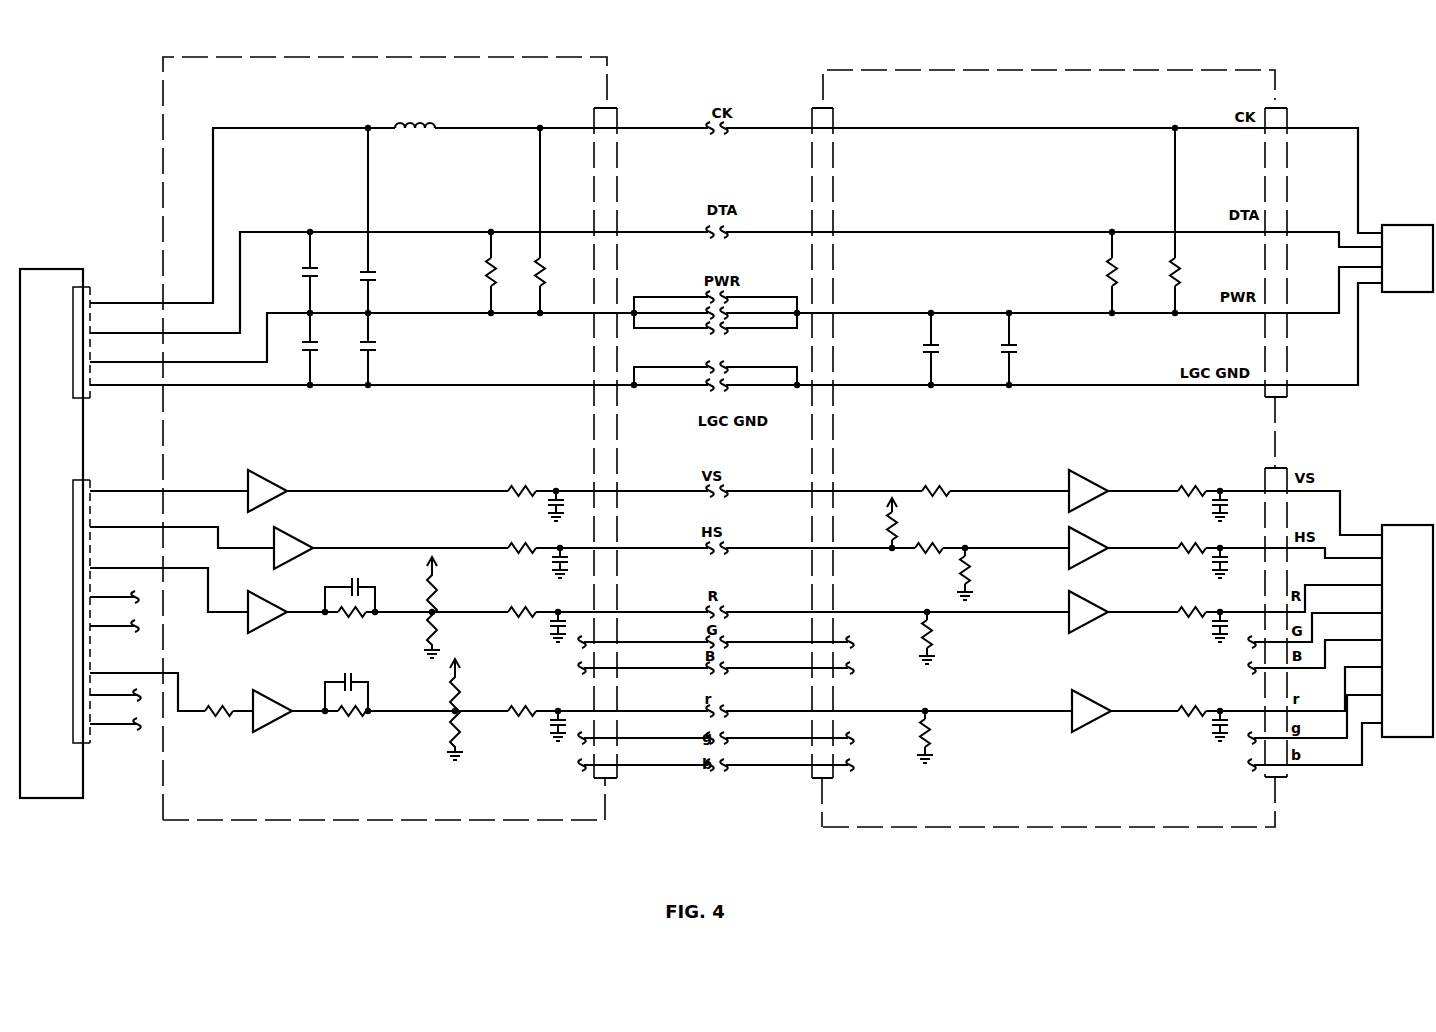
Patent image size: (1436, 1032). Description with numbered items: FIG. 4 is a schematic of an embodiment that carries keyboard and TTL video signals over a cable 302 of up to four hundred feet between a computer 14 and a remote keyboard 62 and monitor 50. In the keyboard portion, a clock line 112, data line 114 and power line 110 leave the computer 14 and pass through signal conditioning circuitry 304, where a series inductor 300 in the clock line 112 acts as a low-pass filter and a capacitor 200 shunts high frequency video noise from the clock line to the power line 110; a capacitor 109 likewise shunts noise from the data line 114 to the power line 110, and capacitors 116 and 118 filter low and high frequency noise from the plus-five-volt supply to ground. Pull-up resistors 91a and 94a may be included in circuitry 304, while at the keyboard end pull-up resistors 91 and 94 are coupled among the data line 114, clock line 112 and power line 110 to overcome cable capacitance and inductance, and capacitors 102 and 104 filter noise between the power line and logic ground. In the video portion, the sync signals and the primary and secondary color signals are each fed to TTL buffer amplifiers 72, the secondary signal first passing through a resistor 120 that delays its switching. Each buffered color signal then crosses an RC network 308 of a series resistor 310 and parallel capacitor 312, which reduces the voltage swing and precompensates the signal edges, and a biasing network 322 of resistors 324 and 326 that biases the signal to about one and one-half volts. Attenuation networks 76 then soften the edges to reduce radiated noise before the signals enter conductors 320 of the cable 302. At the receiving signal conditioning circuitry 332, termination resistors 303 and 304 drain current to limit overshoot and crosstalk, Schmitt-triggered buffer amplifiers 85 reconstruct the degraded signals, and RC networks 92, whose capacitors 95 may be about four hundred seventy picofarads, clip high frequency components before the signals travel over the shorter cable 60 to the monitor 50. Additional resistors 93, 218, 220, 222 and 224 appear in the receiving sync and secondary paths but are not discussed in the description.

The computer 14 is at (57, 514).
The series inductor 300 is at (422, 133).
The clock line 112 is at (736, 205).
The data line 114 is at (736, 268).
The power line 110 is at (967, 295).
The capacitor 109 is at (304, 268).
The capacitor 200 is at (387, 220).
The capacitor 116 is at (305, 356).
The capacitor 118 is at (373, 356).
The pull-up resistor 91a is at (486, 272).
The pull-up resistor 94a is at (546, 272).
The pull-up resistor 94 is at (1106, 272).
The pull-up resistor 91 is at (1182, 275).
The capacitor 102 is at (921, 346).
The capacitor 104 is at (1012, 348).
The cable 302 is at (742, 87).
The conductors 320 is at (644, 712).
The keyboard 62 is at (1407, 241).
The monitor 50 is at (1407, 614).
The cable 60 is at (1362, 497).
The TTL buffer amplifier 72 is at (272, 478).
The Schmitt-triggered buffer amplifier 85 is at (1090, 475).
The RC network 76 is at (512, 522).
The RC network 92 is at (1178, 519).
The resistor 93 is at (1198, 706).
The capacitor 95 is at (1216, 740).
The resistor 218 is at (946, 489).
The variable resistor 220 is at (916, 515).
The resistor 224 is at (937, 553).
The resistor 222 is at (981, 567).
The termination resistor 303 is at (946, 633).
The signal conditioning circuitry 304 is at (945, 732).
The capacitor 312 is at (345, 682).
The series resistor 310 is at (355, 617).
The RC network 308 is at (343, 656).
The resistor 324 is at (440, 598).
The resistor 326 is at (432, 620).
The biasing network 322 is at (467, 647).
The resistor 120 is at (222, 718).
The signal conditioning circuitry 332 is at (998, 450).